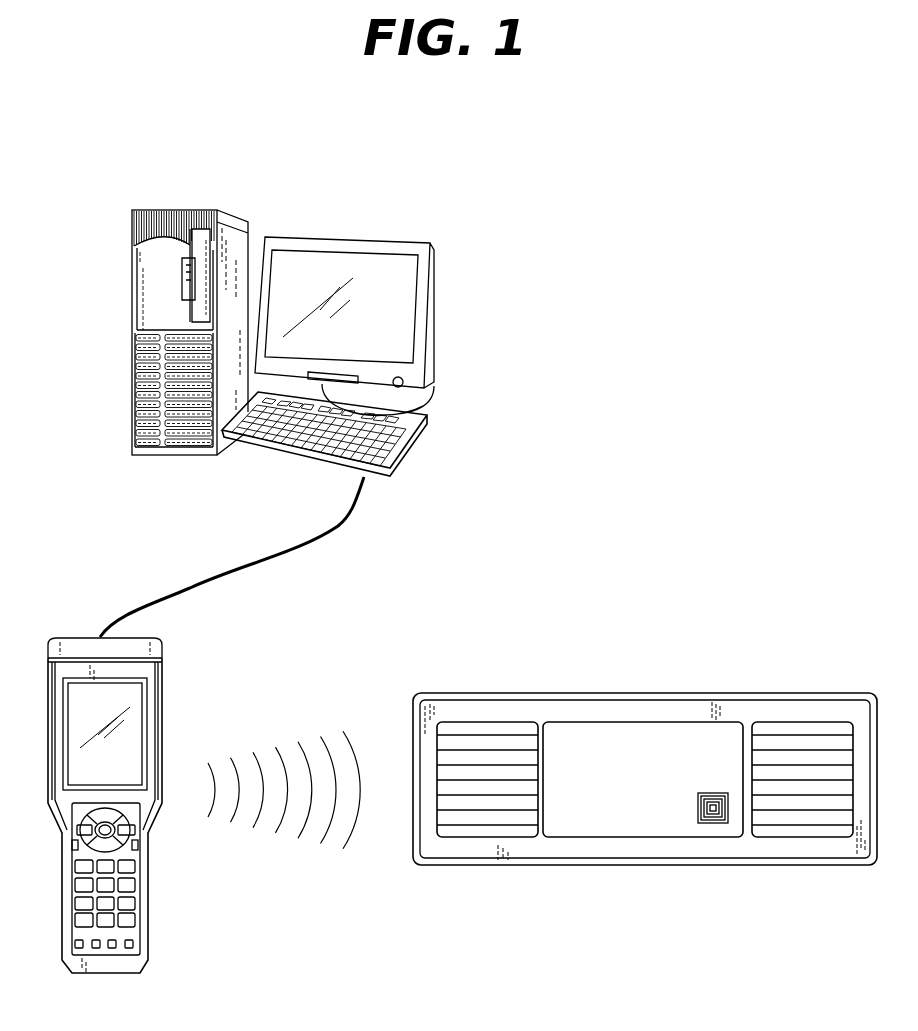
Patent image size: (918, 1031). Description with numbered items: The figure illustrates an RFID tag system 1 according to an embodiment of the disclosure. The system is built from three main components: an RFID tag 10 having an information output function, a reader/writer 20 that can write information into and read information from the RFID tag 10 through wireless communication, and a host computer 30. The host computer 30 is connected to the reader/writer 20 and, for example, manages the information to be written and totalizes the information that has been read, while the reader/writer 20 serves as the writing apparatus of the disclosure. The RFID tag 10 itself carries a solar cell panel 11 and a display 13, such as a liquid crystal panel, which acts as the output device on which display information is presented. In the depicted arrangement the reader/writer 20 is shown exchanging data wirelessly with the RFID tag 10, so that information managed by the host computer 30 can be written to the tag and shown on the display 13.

The RFID tag system 1 is at (620, 168).
The RFID tag 10 is at (617, 695).
The solar cell panel 11 is at (458, 722).
The display 13 is at (670, 722).
The reader/writer 20 is at (162, 693).
The host computer 30 is at (290, 232).